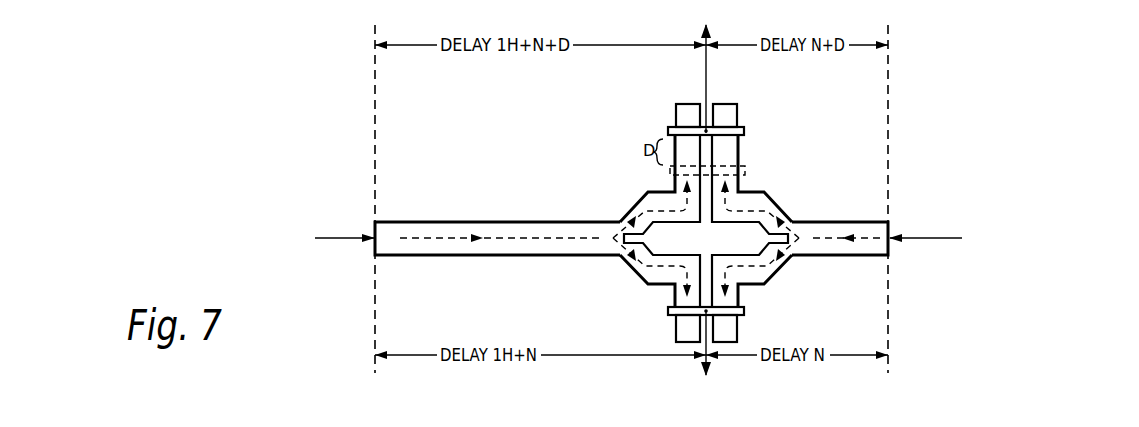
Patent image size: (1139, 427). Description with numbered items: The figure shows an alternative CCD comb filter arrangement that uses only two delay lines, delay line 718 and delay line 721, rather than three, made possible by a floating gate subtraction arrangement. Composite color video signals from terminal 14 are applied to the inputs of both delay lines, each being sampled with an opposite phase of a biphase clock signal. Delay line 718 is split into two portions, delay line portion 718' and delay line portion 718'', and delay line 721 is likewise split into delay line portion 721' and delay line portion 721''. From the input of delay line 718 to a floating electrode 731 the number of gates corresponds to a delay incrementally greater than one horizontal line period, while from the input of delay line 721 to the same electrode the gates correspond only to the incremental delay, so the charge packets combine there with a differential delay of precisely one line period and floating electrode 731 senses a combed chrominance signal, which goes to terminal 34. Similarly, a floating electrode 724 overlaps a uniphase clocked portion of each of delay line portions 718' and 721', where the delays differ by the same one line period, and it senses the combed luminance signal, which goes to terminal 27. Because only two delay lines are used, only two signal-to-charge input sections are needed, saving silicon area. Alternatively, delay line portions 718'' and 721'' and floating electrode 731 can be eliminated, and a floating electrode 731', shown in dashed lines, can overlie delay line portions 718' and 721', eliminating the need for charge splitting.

The delay line 718 is at (537, 221).
The delay line portion 718' is at (649, 186).
The delay line portion 718'' is at (645, 278).
The delay line 721 is at (800, 221).
The delay line portion 721' is at (771, 186).
The delay line portion 721'' is at (780, 272).
The floating electrode 724 is at (745, 131).
The floating electrode 731 is at (729, 324).
The floating electrode 731' is at (726, 162).
The terminal 14 is at (640, 238).
The terminal 27 is at (708, 68).
The terminal 34 is at (685, 345).